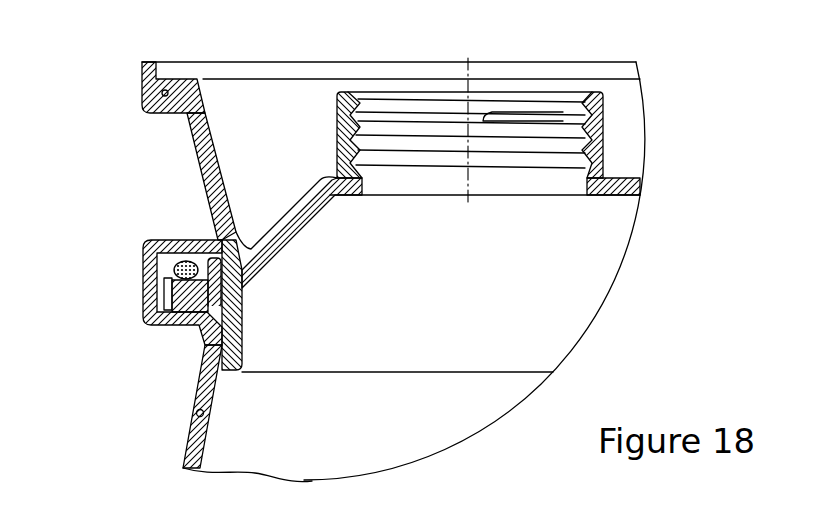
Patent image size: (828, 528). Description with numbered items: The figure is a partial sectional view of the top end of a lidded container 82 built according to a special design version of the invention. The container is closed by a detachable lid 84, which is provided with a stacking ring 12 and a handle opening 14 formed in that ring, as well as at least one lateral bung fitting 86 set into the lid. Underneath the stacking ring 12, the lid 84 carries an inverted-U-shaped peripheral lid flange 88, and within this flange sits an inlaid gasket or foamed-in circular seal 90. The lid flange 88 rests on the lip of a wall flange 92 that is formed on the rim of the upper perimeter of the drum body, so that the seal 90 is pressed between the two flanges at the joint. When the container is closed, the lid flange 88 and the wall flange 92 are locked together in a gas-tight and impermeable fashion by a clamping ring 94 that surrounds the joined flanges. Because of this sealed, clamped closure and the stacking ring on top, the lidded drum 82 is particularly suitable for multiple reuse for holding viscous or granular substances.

The stacking ring 12 is at (142, 97).
The handle opening 14 is at (217, 188).
The lidded container 82 is at (632, 297).
The detachable lid 84 is at (410, 297).
The lateral bung fitting 86 is at (600, 122).
The peripheral lid flange 88 is at (197, 242).
The circular seal 90 is at (175, 270).
The wall flange 92 is at (168, 330).
The clamping ring 94 is at (150, 314).